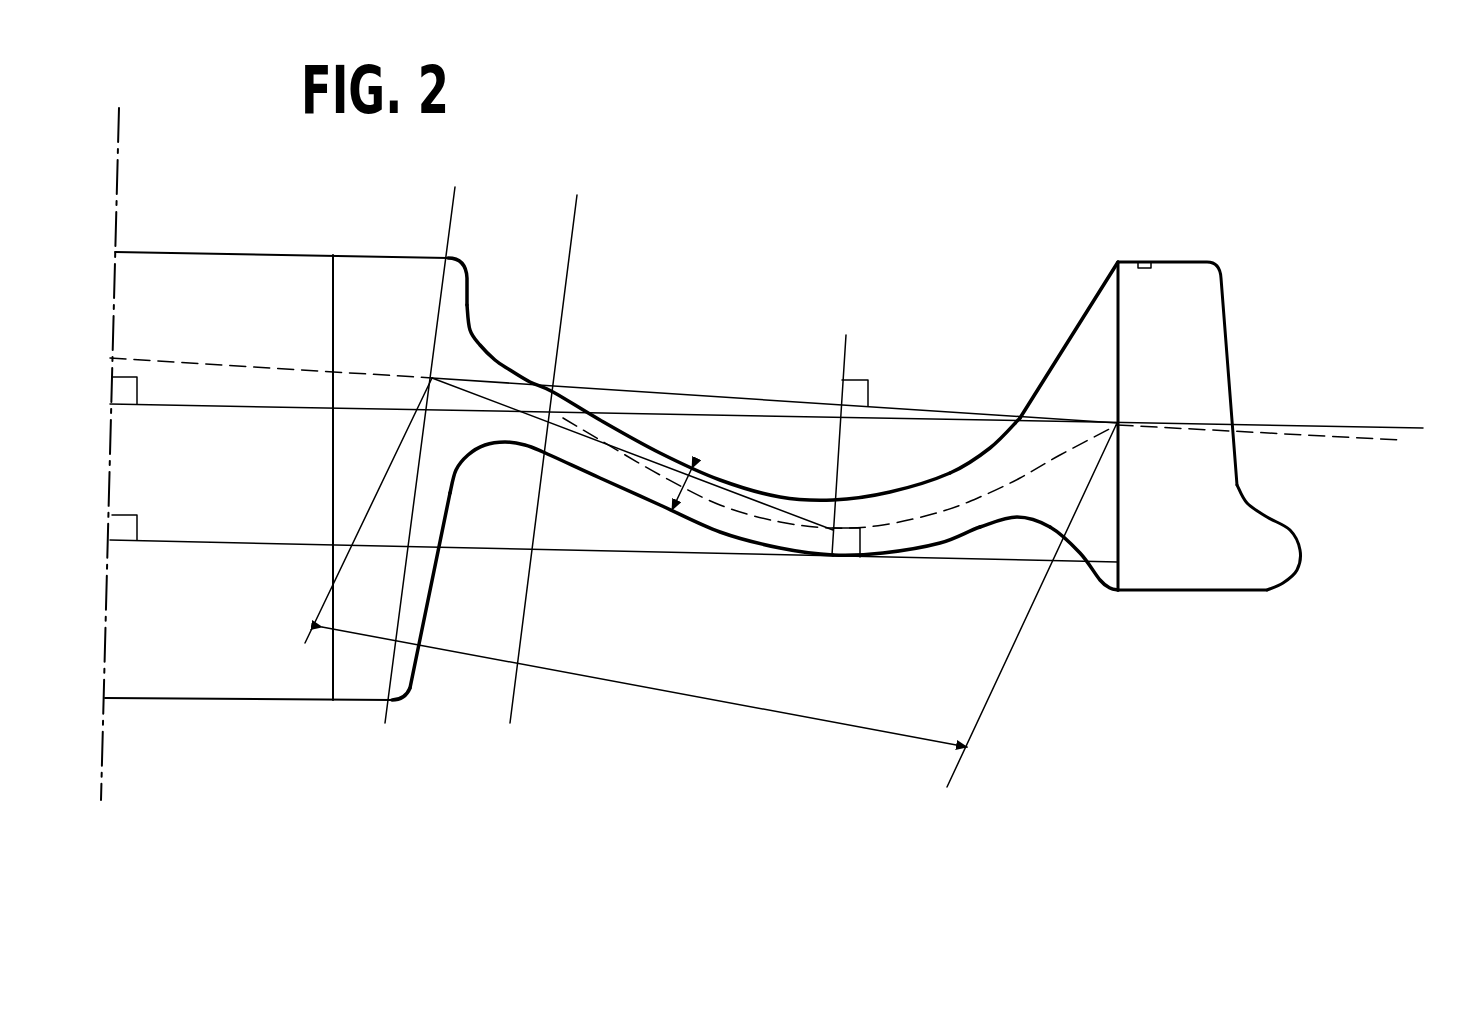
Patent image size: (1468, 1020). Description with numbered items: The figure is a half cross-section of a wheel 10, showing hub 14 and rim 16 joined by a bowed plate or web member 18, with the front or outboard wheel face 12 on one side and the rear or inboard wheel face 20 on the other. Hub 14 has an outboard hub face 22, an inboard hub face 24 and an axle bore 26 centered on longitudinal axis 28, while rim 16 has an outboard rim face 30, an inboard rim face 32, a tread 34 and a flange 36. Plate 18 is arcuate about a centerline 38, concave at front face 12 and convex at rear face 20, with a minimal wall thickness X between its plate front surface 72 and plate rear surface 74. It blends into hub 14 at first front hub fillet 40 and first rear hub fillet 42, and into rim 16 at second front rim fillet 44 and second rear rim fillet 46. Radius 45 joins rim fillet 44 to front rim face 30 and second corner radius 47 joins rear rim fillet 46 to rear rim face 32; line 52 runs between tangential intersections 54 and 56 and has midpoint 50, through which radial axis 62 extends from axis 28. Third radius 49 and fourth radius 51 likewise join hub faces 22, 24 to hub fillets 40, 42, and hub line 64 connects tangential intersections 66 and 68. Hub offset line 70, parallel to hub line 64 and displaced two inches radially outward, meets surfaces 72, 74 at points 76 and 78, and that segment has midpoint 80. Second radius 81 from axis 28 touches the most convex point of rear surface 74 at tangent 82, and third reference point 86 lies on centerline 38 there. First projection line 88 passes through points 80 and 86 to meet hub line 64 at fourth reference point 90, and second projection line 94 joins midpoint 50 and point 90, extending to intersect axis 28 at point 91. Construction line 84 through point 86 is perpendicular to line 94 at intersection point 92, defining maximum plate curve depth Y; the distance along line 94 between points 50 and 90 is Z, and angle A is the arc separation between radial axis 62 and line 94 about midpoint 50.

The wheel 10 is at (1106, 85).
The front or outboard wheel face 12 is at (800, 230).
The hub 14 is at (353, 674).
The rim 16 is at (1194, 288).
The contoured plate or web member 18 is at (682, 524).
The rear or inboard wheel face 20 is at (1199, 657).
The outboard hub face 22 is at (246, 252).
The inboard hub face 24 is at (222, 701).
The axle bore 26 is at (292, 282).
The longitudinal axis 28 is at (118, 212).
The outboard rim face 30 is at (1209, 262).
The inboard rim face 32 is at (1250, 590).
The tread 34 is at (1226, 317).
The flange 36 is at (1288, 542).
The plate centerline 38 is at (1038, 466).
The first front hub fillet 40 is at (482, 345).
The first rear hub fillet 42 is at (494, 445).
The second front rim fillet 44 is at (1020, 418).
The radius 45 is at (1117, 263).
The second rear rim fillet 46 is at (1035, 518).
The second corner radius 47 is at (1108, 591).
The third radius 49 is at (468, 270).
The midpoint 50 is at (1118, 423).
The fourth radius 51 is at (408, 697).
The line 52 is at (1118, 535).
The tangential intersection 54 is at (1143, 262).
The tangential intersection 56 is at (1118, 592).
The radial axis or first radius 62 is at (218, 406).
The hub line 64 is at (402, 598).
The tangential intersection 66 is at (448, 256).
The tangential intersection 68 is at (394, 708).
The hub offset or reference line 70 is at (517, 698).
The plate front surface 72 is at (692, 468).
The plate rear surface 74 is at (942, 543).
The point 76 is at (560, 386).
The point 78 is at (546, 455).
The midpoint (second reference point) 80 is at (563, 418).
The second radius 81 is at (185, 544).
The tangent point 82 is at (832, 555).
The construction line 84 is at (846, 340).
The third reference point 86 is at (833, 532).
The first projection line 88 is at (470, 397).
The fourth reference point 90 is at (432, 378).
The point 91 is at (112, 358).
The intersection point 92 is at (842, 395).
The second projection line 94 is at (250, 358).
The angle of inclination A is at (650, 413).
The minimal wall thickness X is at (673, 503).
The maximum plate curve depth Y is at (850, 453).
The separation distance Z is at (767, 710).